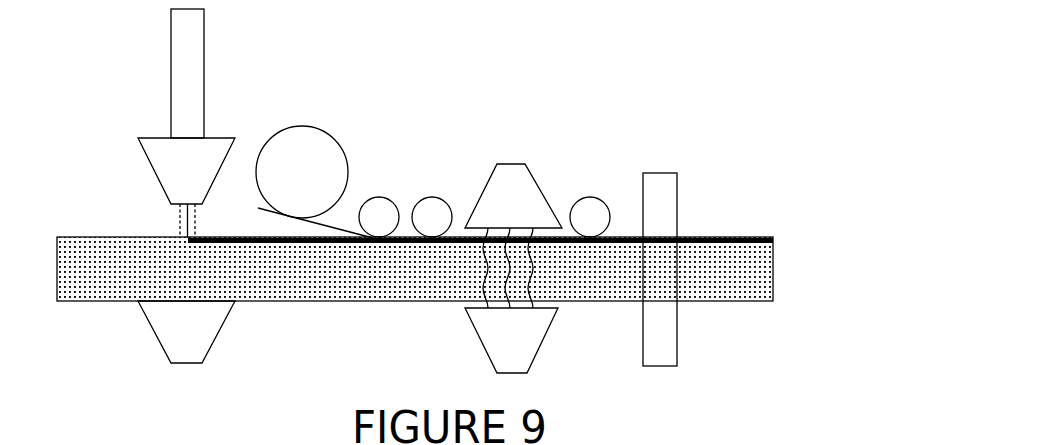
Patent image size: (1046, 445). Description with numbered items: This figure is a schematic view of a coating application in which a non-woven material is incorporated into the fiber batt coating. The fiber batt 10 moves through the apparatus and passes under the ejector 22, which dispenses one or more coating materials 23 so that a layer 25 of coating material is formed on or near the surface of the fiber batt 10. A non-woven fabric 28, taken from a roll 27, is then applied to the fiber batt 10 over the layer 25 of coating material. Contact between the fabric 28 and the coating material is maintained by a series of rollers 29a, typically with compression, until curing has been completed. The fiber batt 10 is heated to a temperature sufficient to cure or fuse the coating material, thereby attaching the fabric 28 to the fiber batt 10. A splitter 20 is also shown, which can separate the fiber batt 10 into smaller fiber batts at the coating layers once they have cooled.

The fiber batt 10 is at (121, 276).
The splitter 20 is at (680, 205).
The ejector 22 is at (155, 134).
The coating material 23 is at (174, 218).
The layer 25 is at (281, 249).
The roll 27 is at (302, 126).
The non-woven fabric 28 is at (326, 220).
The rollers 29a is at (393, 197).